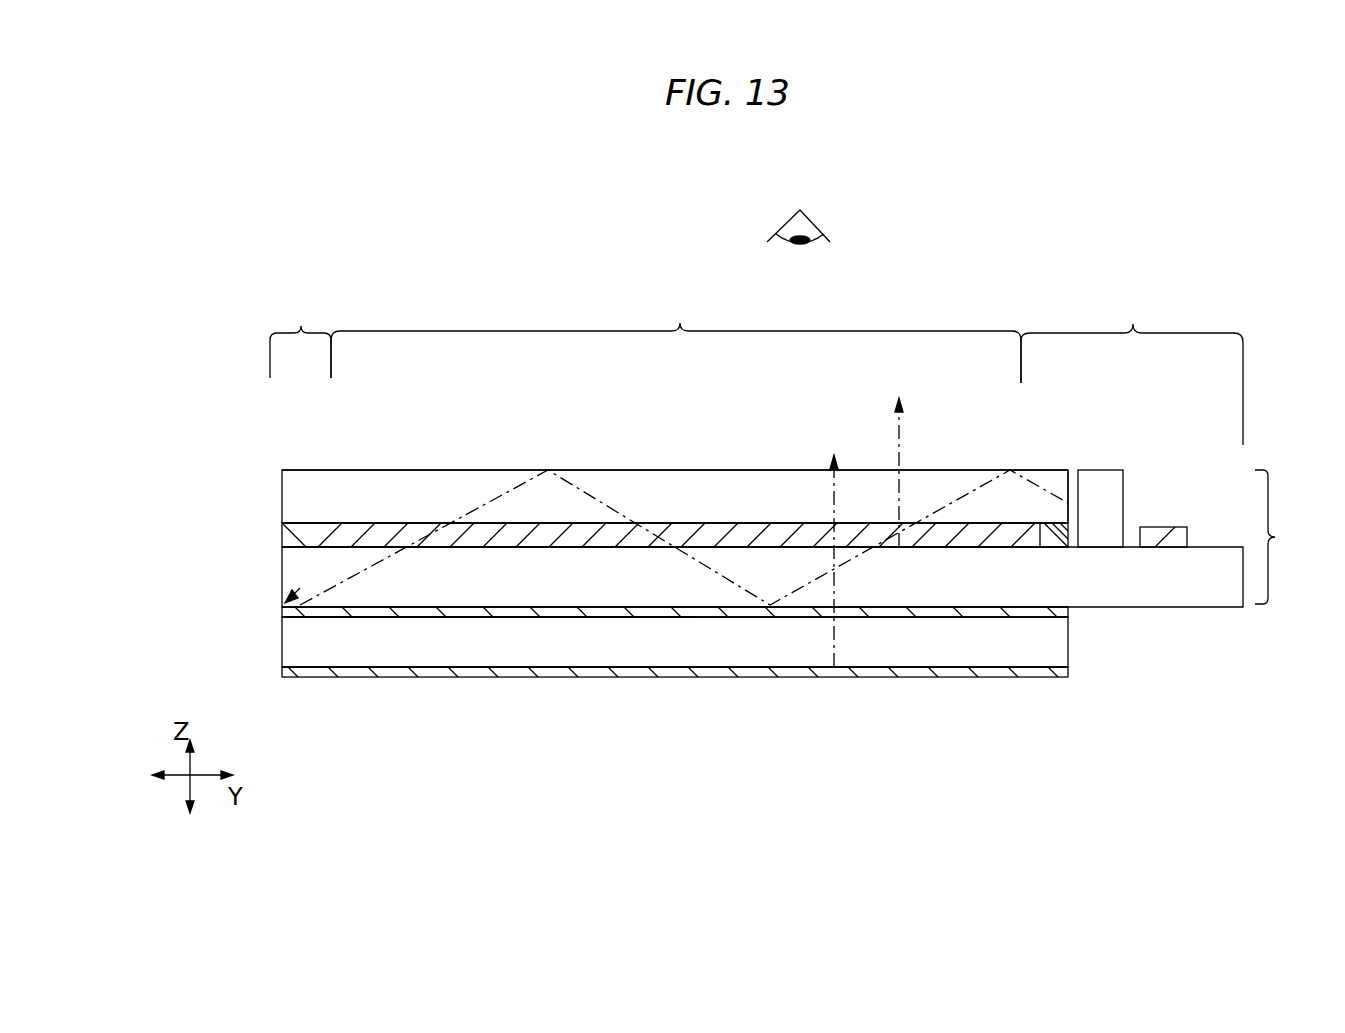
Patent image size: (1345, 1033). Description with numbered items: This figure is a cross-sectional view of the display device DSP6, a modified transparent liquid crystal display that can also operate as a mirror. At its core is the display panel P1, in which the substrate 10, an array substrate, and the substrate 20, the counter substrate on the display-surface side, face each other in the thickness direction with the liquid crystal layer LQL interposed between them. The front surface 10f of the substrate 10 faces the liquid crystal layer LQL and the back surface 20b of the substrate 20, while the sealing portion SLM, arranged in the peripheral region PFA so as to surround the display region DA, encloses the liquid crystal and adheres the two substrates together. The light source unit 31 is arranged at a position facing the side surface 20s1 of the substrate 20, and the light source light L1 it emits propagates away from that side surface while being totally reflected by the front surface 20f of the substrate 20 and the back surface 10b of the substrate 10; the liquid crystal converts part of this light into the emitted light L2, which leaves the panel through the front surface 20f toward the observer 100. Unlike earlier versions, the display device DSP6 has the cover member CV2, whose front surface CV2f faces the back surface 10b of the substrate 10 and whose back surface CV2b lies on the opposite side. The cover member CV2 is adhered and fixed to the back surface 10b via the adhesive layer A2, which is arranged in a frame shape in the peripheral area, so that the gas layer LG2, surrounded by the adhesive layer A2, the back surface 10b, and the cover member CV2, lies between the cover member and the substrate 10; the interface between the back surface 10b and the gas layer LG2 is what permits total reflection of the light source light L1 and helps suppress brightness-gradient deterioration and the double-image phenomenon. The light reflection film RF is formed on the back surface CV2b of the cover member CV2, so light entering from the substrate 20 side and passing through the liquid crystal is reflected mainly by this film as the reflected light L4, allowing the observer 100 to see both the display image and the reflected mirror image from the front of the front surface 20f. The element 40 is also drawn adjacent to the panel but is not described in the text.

The substrate 20 is at (310, 498).
The sealing portion SLM is at (312, 536).
The substrate 10 is at (310, 580).
The adhesive layer A2 is at (300, 612).
The cover member CV2 is at (310, 642).
The light reflection film RF is at (440, 673).
The light source unit 31 is at (1100, 525).
The circuit board / element 40 is at (1167, 530).
The front surface 20f is at (558, 460).
The back surface 20b is at (787, 529).
The side surface 20s1 is at (1080, 492).
The back surface 10b is at (567, 612).
The front surface 10f is at (606, 535).
The gas layer LG2 is at (493, 612).
The front surface CV2f is at (742, 598).
The back surface CV2b is at (704, 678).
The liquid crystal layer LQL is at (400, 540).
The light source light L1 is at (965, 497).
The emitted light L2 is at (899, 448).
The reflected light L4 is at (836, 652).
The peripheral region PFA is at (756, 368).
The display region DA is at (676, 338).
The display panel P1 is at (1288, 537).
The observer 100 is at (848, 216).
The display device DSP6 is at (490, 265).